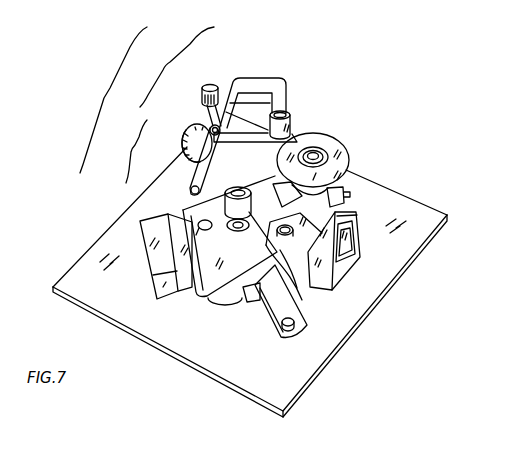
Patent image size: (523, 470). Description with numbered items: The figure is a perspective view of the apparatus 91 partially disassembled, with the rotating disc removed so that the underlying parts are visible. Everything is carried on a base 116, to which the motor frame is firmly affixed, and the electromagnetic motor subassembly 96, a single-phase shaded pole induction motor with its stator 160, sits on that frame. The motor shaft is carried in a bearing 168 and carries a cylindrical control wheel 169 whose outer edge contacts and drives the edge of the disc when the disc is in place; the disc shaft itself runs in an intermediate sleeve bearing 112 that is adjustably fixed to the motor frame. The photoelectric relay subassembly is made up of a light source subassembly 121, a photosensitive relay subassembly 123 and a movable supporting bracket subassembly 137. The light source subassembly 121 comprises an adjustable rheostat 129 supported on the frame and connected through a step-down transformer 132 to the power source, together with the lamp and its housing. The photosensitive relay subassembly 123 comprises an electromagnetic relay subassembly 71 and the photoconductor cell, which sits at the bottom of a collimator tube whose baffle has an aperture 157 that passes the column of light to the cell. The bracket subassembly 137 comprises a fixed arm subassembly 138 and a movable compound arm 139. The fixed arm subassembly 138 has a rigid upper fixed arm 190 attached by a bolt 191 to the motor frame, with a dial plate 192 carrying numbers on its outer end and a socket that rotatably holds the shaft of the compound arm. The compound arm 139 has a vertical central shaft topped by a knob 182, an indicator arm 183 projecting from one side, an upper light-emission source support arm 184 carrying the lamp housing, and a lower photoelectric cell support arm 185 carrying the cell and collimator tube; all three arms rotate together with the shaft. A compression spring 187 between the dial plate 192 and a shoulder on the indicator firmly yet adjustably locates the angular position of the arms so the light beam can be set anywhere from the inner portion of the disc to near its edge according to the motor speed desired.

The apparatus 91 is at (80, 184).
The electromagnetic relay subassembly 71 is at (153, 258).
The electromagnetic motor subassembly 96 is at (202, 300).
The intermediate sleeve bearing 112 is at (330, 160).
The base 116 is at (288, 378).
The light source subassembly 121 is at (278, 72).
The photosensitive relay subassembly 123 is at (298, 127).
The adjustable rheostat 129 is at (350, 203).
The step-down transformer 132 is at (361, 249).
The movable supporting bracket subassembly 137 is at (112, 100).
The fixed arm subassembly 138 is at (123, 151).
The movable compound arm 139 is at (173, 67).
The aperture 157 is at (285, 112).
The stator 160 is at (246, 294).
The bearing 168 is at (245, 213).
The control wheel 169 is at (268, 249).
The knob 182 is at (203, 90).
The indicator arm 183 is at (199, 126).
The upper light-emission source support arm 184 is at (234, 91).
The lower photoelectric cell support arm 185 is at (253, 145).
The spring 187 is at (220, 131).
The upper fixed arm 190 is at (182, 167).
The bolt 191 is at (190, 190).
The dial plate 192 is at (185, 143).